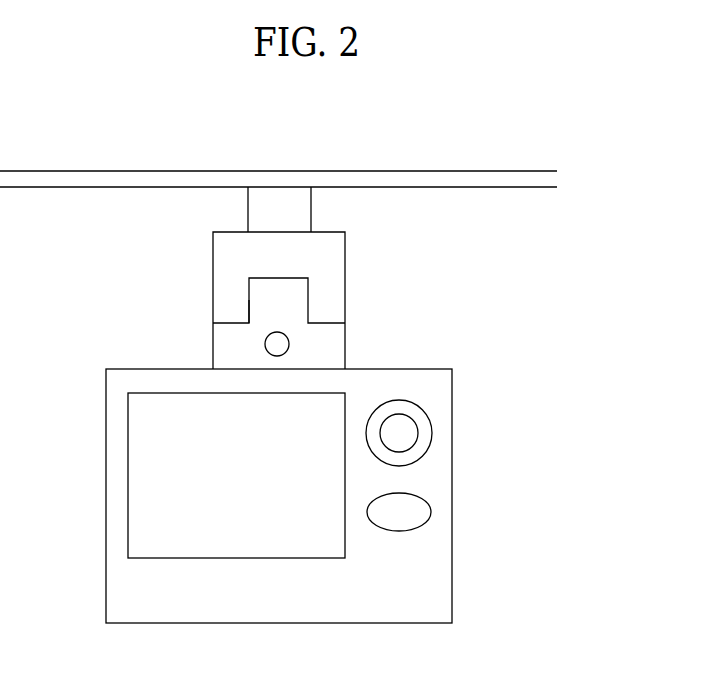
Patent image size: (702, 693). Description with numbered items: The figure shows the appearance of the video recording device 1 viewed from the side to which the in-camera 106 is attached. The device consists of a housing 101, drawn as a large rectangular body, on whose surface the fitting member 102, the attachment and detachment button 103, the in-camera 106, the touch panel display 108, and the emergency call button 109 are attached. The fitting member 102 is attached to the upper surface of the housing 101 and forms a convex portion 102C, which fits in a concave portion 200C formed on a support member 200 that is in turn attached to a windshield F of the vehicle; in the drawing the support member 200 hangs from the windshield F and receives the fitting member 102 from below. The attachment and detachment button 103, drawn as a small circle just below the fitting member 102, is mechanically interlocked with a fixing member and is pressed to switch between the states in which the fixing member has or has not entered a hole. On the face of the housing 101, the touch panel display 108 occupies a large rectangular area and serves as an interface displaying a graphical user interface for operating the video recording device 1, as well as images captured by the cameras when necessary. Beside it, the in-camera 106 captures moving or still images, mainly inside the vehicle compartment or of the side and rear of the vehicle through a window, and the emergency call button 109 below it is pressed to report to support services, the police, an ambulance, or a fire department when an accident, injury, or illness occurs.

The windshield F is at (76, 177).
The video recording device 1 is at (588, 294).
The housing 101 is at (436, 468).
The fitting member 102 is at (336, 343).
The convex portion 102C is at (297, 303).
The attachment and detachment button 103 is at (280, 347).
The in-camera 106 is at (428, 426).
The touch panel display 108 is at (333, 488).
The emergency call button 109 is at (430, 508).
The support member 200 is at (230, 270).
The concave portion 200C is at (250, 309).